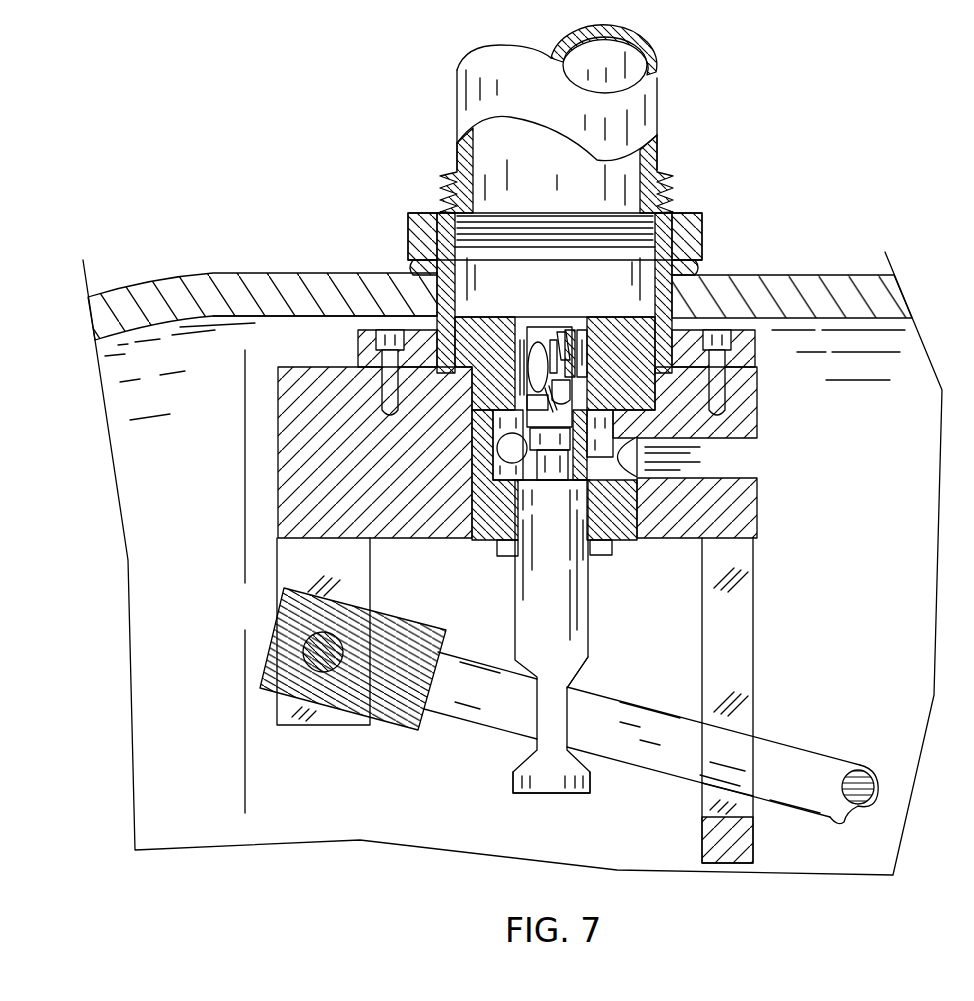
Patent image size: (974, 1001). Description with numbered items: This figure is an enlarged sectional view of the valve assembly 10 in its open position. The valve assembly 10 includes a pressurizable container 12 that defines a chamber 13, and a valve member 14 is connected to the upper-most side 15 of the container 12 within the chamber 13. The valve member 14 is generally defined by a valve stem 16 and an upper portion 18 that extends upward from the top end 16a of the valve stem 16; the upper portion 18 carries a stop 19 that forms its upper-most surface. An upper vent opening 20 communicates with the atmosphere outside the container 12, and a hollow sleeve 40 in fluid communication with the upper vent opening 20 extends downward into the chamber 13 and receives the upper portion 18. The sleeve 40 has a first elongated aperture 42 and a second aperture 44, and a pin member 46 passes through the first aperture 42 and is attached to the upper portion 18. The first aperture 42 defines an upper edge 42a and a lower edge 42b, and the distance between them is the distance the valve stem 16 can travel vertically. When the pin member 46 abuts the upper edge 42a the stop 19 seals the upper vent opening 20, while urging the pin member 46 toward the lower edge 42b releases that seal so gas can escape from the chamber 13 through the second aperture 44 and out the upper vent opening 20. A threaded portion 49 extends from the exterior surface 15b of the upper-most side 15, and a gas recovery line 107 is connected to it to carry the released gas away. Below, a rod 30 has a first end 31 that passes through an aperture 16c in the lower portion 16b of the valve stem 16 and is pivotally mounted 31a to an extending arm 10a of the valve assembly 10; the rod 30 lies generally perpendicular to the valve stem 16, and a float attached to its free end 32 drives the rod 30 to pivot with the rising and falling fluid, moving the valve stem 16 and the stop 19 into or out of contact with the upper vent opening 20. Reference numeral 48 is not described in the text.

The gas recovery line 107 is at (647, 100).
The valve assembly 10 is at (818, 133).
The threaded portion 49 is at (658, 232).
The exterior surface 15b is at (238, 270).
The pressurizable container 12 is at (775, 275).
The chamber 13 is at (918, 352).
The upper-most side 15 is at (248, 320).
The stop 19 is at (528, 343).
The second aperture 44 is at (537, 340).
The upper vent opening 20 is at (545, 325).
The hollow sleeve 40 is at (567, 333).
The upper edge 42a is at (557, 343).
The seal 48 is at (527, 375).
The pin member 46 is at (552, 394).
The first elongated aperture 42 is at (555, 396).
The lower edge 42b is at (573, 404).
The upper portion 18 is at (580, 443).
The valve member 14 is at (607, 474).
The top end 16a is at (525, 472).
The extending arm 10a is at (283, 553).
The valve stem 16 is at (517, 588).
The first end 31 is at (463, 655).
The pivotal mounting 31a is at (303, 661).
The aperture 16c is at (581, 699).
The lower portion 16b is at (548, 748).
The rod 30 is at (687, 775).
The free end 32 is at (825, 745).